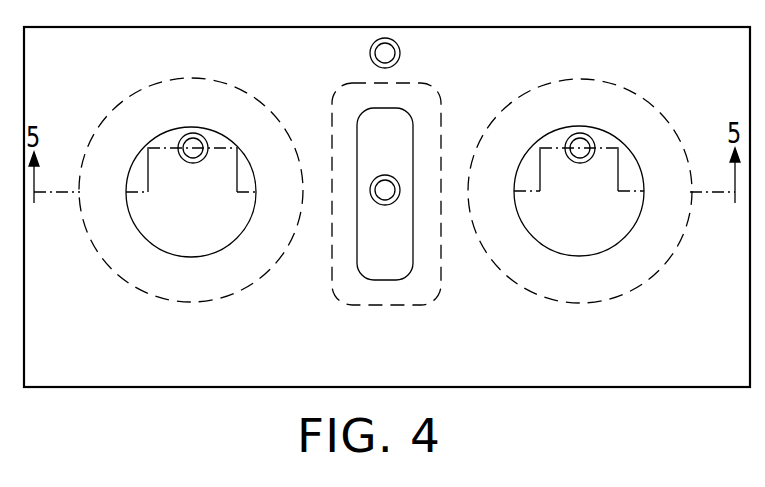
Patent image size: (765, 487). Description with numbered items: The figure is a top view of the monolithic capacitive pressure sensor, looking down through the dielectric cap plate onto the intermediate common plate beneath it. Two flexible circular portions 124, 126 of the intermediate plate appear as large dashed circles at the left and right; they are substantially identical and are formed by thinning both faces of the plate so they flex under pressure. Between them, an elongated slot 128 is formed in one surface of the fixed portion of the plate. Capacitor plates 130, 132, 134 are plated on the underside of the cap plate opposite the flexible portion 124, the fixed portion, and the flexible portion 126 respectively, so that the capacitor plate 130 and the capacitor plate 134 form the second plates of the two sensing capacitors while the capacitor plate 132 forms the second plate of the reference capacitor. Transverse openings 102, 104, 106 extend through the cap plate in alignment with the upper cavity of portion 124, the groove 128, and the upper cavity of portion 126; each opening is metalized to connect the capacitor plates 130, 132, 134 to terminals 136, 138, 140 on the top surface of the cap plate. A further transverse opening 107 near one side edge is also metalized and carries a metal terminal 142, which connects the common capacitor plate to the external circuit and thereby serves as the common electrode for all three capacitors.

The transverse opening 102 is at (193, 148).
The transverse opening 104 is at (380, 177).
The transverse opening 106 is at (582, 146).
The transverse opening 107 is at (388, 52).
The flexible circular portion 124 is at (152, 285).
The flexible circular portion 126 is at (560, 288).
The elongated slot 128 is at (368, 293).
The capacitor plate 130 is at (210, 235).
The capacitor plate 132 is at (405, 255).
The capacitor plate 134 is at (605, 240).
The terminal 136 is at (183, 136).
The terminal 138 is at (390, 187).
The terminal 140 is at (583, 163).
The metal terminal 142 is at (400, 61).